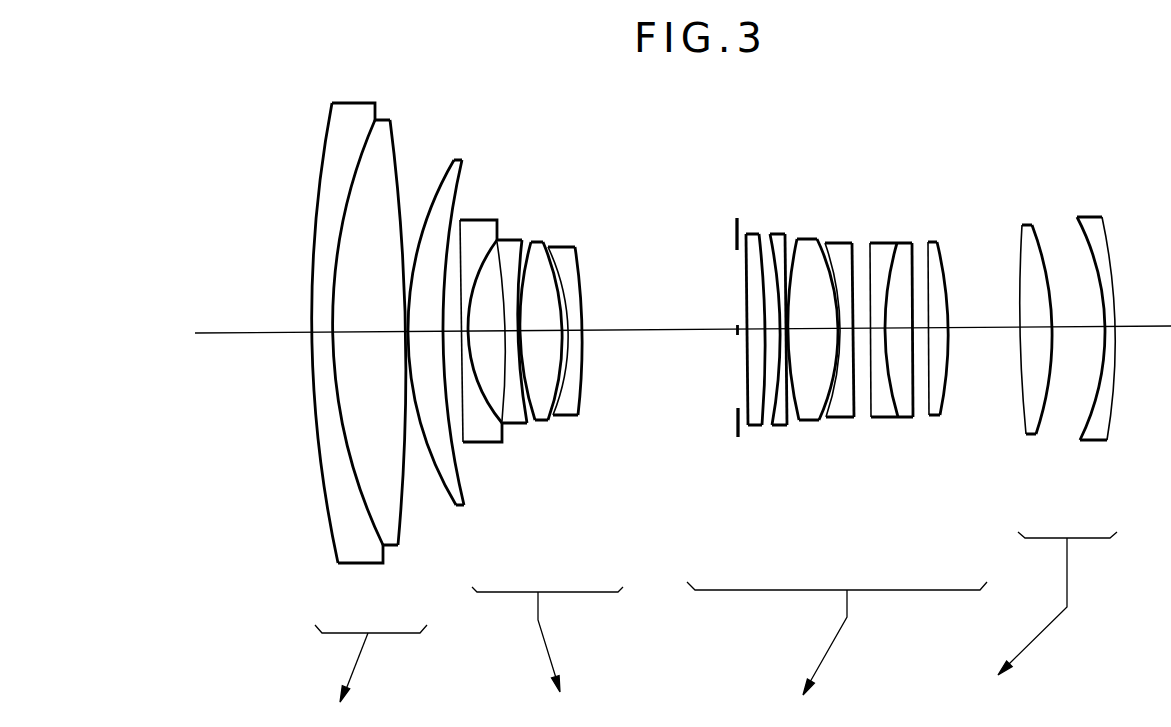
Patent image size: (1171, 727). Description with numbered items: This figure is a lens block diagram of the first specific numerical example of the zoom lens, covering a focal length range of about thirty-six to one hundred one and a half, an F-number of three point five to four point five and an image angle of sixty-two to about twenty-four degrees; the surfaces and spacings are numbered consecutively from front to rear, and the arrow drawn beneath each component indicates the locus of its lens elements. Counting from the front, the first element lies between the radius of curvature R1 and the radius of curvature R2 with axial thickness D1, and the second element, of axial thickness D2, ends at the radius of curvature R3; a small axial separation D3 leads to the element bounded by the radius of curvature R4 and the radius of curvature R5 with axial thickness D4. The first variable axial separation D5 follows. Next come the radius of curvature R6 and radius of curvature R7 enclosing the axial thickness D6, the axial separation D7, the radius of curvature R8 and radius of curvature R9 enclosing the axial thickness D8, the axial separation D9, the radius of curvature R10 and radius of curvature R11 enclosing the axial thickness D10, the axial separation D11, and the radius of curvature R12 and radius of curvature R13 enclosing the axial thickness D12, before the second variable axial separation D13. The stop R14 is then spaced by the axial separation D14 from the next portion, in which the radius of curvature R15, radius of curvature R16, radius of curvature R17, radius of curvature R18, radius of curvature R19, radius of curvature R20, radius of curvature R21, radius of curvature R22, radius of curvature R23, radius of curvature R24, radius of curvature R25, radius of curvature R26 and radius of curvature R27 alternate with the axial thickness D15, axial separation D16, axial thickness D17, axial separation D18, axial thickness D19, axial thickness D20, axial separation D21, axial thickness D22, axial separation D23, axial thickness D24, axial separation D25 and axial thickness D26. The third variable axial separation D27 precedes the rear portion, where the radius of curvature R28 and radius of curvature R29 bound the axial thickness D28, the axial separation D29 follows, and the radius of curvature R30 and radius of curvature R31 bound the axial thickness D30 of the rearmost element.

The radius of curvature R1 is at (328, 115).
The radius of curvature R2 is at (367, 124).
The radius of curvature R3 is at (397, 138).
The radius of curvature R4 is at (448, 172).
The radius of curvature R5 is at (459, 160).
The radius of curvature R6 is at (468, 236).
The radius of curvature R7 is at (492, 242).
The radius of curvature R8 is at (502, 247).
The radius of curvature R9 is at (522, 240).
The radius of curvature R10 is at (532, 242).
The radius of curvature R11 is at (544, 243).
The radius of curvature R12 is at (550, 247).
The radius of curvature R13 is at (576, 250).
The stop R14 is at (736, 232).
The radius of curvature R15 is at (745, 233).
The radius of curvature R16 is at (760, 234).
The radius of curvature R17 is at (771, 234).
The radius of curvature R18 is at (785, 234).
The radius of curvature R19 is at (797, 239).
The radius of curvature R20 is at (817, 239).
The radius of curvature R21 is at (826, 243).
The radius of curvature R22 is at (852, 243).
The radius of curvature R23 is at (870, 243).
The radius of curvature R24 is at (897, 243).
The radius of curvature R25 is at (911, 243).
The radius of curvature R26 is at (928, 242).
The radius of curvature R27 is at (938, 242).
The radius of curvature R28 is at (1022, 238).
The radius of curvature R29 is at (1034, 232).
The radius of curvature R30 is at (1078, 217).
The radius of curvature R31 is at (1103, 217).
The axial thickness D1 is at (323, 333).
The axial thickness D2 is at (362, 333).
The axial separation D3 is at (406, 333).
The axial thickness D4 is at (433, 333).
The axial separation D5 is at (452, 333).
The axial thickness D6 is at (464, 333).
The axial separation D7 is at (485, 333).
The axial thickness D8 is at (511, 333).
The axial separation D9 is at (519, 333).
The axial thickness D10 is at (541, 333).
The axial separation D11 is at (565, 333).
The axial thickness D12 is at (575, 333).
The axial separation D13 is at (648, 333).
The axial separation D14 is at (740, 334).
The axial thickness D15 is at (755, 332).
The axial separation D16 is at (768, 332).
The axial thickness D17 is at (782, 332).
The axial separation D18 is at (788, 332).
The axial thickness D19 is at (810, 332).
The axial thickness D20 is at (839, 332).
The axial separation D21 is at (846, 332).
The axial thickness D22 is at (861, 332).
The axial separation D23 is at (878, 332).
The axial thickness D24 is at (898, 332).
The axial separation D25 is at (920, 332).
The axial thickness D26 is at (938, 332).
The axial separation D27 is at (981, 329).
The axial thickness D28 is at (1035, 330).
The axial separation D29 is at (1070, 330).
The axial thickness D30 is at (1110, 330).